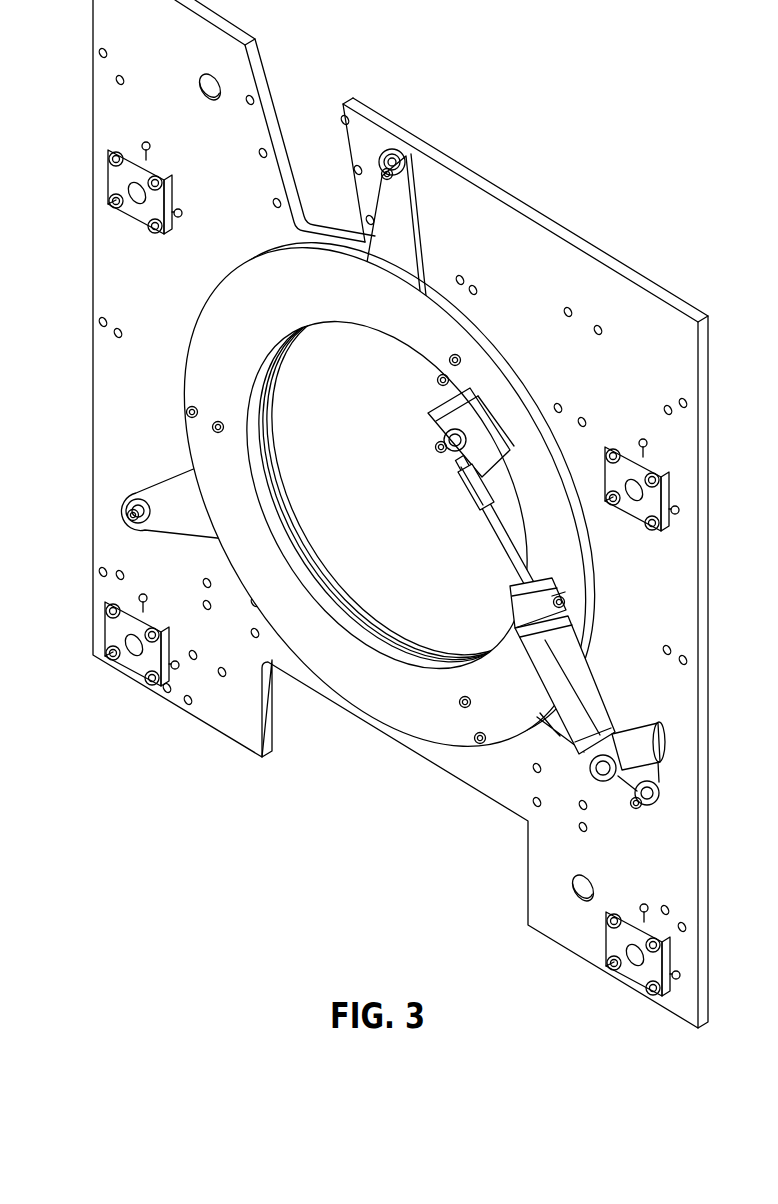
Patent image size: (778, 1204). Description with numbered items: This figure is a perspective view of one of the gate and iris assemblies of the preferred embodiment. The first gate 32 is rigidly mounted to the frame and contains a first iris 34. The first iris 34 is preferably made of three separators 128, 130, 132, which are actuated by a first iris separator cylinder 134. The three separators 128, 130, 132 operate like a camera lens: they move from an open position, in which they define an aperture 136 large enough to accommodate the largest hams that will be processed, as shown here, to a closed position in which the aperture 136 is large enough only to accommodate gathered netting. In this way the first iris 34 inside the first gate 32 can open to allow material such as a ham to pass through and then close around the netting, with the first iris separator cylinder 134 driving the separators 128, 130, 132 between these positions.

The first gate 32 is at (540, 243).
The first iris 34 is at (225, 320).
The separator 128 is at (180, 498).
The separator 130 is at (395, 222).
The separator 132 is at (554, 732).
The first iris separator cylinder 134 is at (575, 682).
The aperture 136 is at (418, 504).